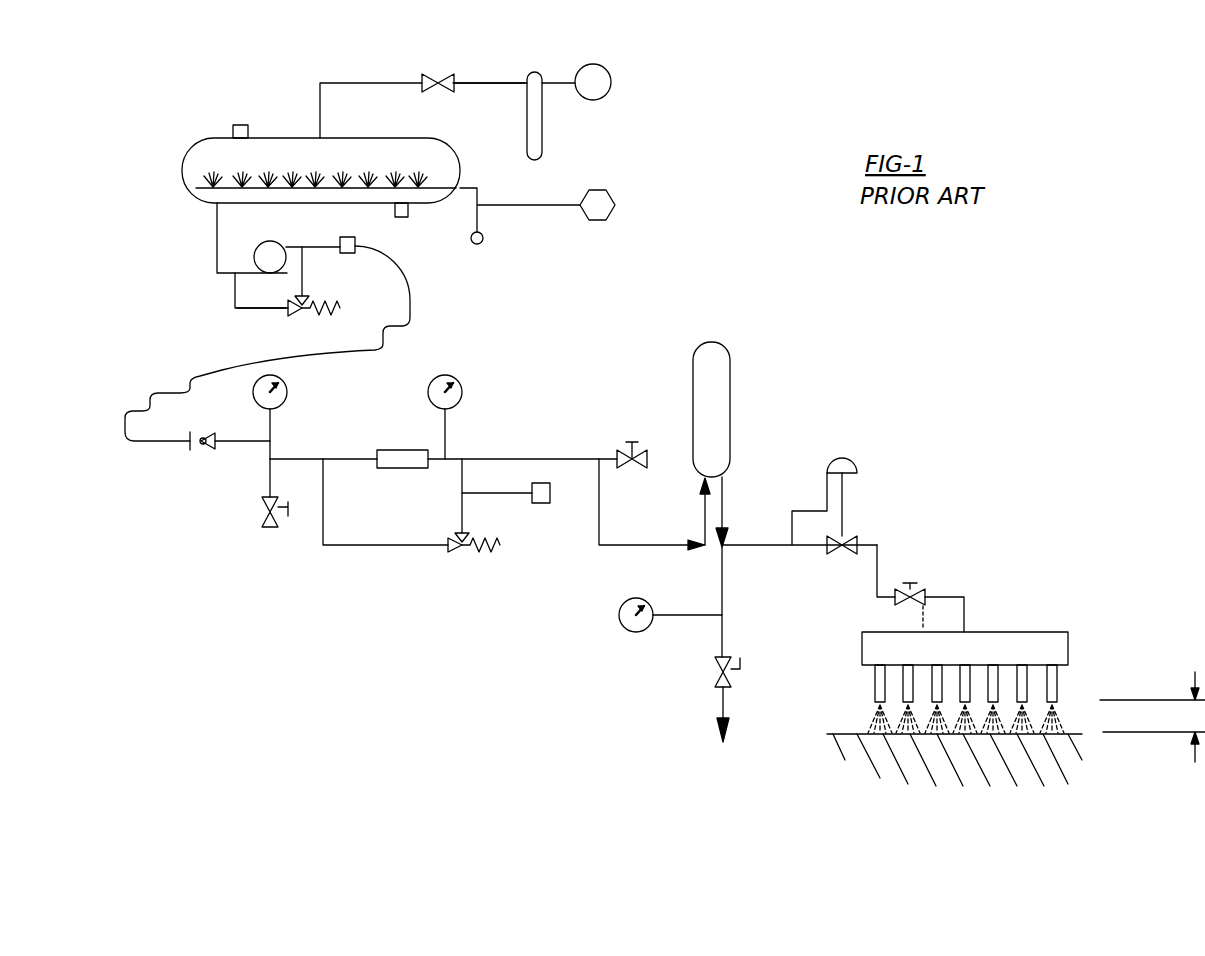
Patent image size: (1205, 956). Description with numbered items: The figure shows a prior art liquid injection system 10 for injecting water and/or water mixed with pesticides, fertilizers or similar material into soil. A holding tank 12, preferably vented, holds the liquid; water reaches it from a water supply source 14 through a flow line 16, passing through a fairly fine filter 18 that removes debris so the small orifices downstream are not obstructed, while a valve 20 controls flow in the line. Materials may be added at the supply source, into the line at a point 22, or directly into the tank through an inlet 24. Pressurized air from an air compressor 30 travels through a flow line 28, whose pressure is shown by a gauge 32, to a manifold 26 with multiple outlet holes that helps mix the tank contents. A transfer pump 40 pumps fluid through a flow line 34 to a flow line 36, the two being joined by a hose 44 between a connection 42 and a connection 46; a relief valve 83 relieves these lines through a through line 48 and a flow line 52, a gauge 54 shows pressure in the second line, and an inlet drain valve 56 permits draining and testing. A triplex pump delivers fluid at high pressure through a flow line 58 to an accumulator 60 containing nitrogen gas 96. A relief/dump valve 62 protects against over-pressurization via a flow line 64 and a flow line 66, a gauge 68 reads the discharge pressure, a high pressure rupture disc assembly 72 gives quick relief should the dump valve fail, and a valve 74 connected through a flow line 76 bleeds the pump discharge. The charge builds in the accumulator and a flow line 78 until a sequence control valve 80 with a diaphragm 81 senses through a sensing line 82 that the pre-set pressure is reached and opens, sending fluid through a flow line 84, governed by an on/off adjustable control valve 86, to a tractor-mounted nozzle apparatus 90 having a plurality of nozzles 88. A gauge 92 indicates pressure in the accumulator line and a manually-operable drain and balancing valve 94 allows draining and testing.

The prior art spray system 10 is at (201, 128).
The holding tank 12 is at (183, 175).
The water supply source 14 is at (610, 90).
The flow line 16 is at (490, 83).
The filter 18 is at (537, 138).
The valve 20 is at (432, 78).
The point 22 is at (475, 85).
The inlet 24 is at (240, 124).
The manifold 26 is at (212, 189).
The flow line 28 is at (555, 205).
The air compressor 30 is at (598, 191).
The gauge 32 is at (483, 240).
The flow line 34 is at (338, 242).
The flow line 36 is at (240, 445).
The transfer pump 40 is at (266, 247).
The connection 42 is at (212, 432).
The hose 44 is at (410, 300).
The connection 46 is at (347, 254).
The through line 48 is at (235, 293).
The flow line 52 is at (260, 309).
The gauge 54 is at (285, 400).
The inlet drain valve 56 is at (266, 524).
The flow line 58 is at (605, 547).
The accumulator 60 is at (730, 356).
The relief/dump valve 62 is at (455, 553).
The flow line 64 is at (323, 485).
The flow line 66 is at (462, 520).
The gauge 68 is at (455, 378).
The high pressure rupture disc assembly 72 is at (542, 503).
The valve 74 is at (632, 442).
The flow line 76 is at (610, 457).
The flow line 78 is at (778, 547).
The sequence control valve 80 is at (840, 458).
The diaphragm 81 is at (855, 468).
The sensing line 82 is at (805, 511).
The relief valve 83 is at (300, 318).
The flow line 84 is at (842, 518).
The on/off adjustable control valve 86 is at (915, 583).
The nozzles 88 is at (875, 690).
The nozzle apparatus 90 is at (1030, 632).
The gauge 92 is at (619, 618).
The drain and balancing valve 94 is at (715, 688).
The nitrogen gas 96 is at (720, 395).